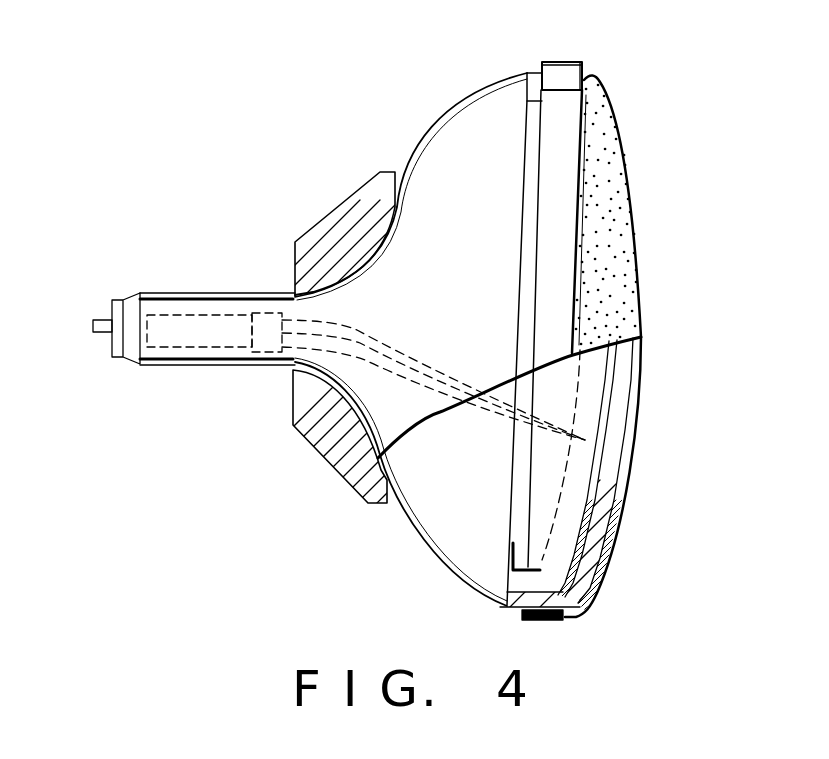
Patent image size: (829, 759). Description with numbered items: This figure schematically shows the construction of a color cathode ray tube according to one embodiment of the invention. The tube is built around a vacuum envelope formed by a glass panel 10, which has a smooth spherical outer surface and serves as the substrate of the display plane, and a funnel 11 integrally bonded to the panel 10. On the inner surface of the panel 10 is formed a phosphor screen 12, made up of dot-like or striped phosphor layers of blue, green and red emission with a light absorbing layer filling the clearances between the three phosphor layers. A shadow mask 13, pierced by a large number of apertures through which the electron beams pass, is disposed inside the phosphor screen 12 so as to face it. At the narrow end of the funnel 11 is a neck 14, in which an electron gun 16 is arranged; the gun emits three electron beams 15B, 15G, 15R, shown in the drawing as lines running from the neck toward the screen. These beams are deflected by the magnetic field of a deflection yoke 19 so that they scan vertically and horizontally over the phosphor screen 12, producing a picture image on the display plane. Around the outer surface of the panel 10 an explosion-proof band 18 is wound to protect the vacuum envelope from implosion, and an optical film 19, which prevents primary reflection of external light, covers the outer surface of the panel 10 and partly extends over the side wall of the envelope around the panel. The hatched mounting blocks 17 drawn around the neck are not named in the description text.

The glass panel 10 is at (617, 424).
The funnel 11 is at (443, 130).
The phosphor screen 12 is at (592, 474).
The shadow mask 13 is at (575, 512).
The neck 14 is at (180, 366).
The green electron beam 15G is at (368, 342).
The red electron beam 15R is at (438, 372).
The blue electron beam 15B is at (420, 383).
The electron gun 16 is at (197, 315).
The mounting block 17 is at (322, 217).
The explosion-proof band 18 is at (572, 62).
The optical film 19 is at (637, 363).